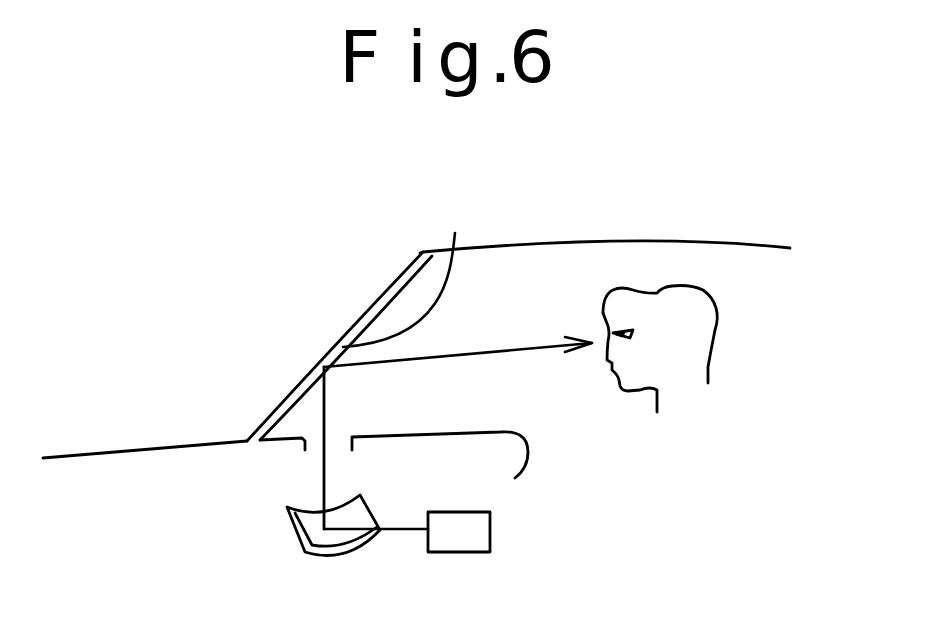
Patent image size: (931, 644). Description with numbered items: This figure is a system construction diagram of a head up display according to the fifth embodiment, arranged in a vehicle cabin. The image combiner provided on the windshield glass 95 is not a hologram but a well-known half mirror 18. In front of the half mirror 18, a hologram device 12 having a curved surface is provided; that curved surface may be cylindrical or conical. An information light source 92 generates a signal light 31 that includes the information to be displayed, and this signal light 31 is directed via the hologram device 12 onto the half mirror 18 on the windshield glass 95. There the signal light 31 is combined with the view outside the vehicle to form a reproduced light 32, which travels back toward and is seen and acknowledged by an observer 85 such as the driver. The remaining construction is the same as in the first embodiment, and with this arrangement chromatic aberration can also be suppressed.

The hologram device 12 is at (293, 530).
The half mirror 18 is at (455, 233).
The signal light 31 is at (403, 533).
The reproduced light 32 is at (488, 348).
The observer 85 is at (700, 327).
The information light source 92 is at (470, 542).
The windshield glass 95 is at (356, 316).